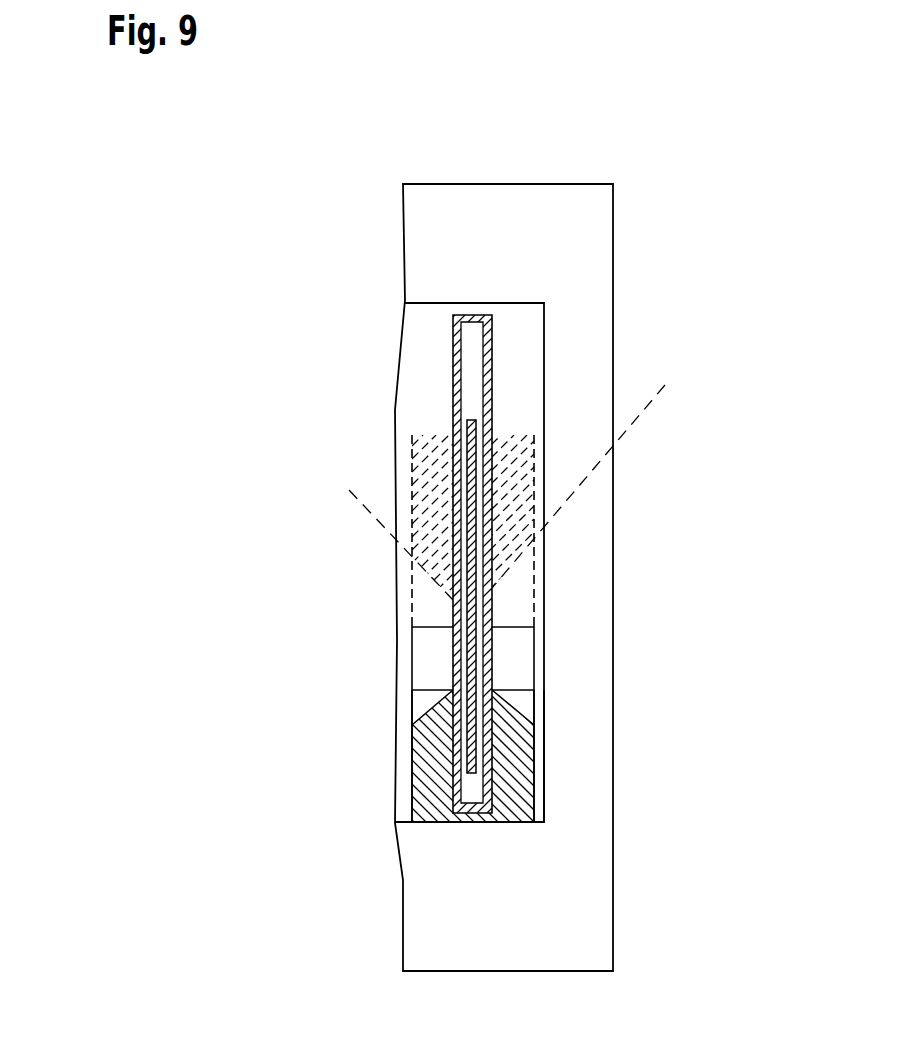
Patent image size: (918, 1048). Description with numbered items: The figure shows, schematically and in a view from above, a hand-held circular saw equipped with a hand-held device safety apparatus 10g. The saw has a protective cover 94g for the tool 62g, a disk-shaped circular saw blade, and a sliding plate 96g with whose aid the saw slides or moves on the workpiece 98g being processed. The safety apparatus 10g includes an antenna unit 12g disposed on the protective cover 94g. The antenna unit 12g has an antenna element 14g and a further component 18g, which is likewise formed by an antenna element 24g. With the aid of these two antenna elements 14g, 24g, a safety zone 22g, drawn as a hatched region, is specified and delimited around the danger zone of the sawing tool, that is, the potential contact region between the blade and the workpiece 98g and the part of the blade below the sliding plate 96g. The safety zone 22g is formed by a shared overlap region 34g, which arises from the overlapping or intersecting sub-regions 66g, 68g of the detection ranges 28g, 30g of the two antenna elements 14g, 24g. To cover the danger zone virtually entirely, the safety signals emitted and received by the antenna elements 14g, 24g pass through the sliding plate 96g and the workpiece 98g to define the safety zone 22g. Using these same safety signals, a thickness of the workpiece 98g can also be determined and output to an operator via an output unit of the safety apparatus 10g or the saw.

The workpiece 98g is at (593, 250).
The sliding plate 96g is at (420, 333).
The protective cover 94g is at (490, 512).
The safety zone 22g is at (525, 435).
The antenna element 24g is at (423, 655).
The antenna element 14g is at (525, 658).
The further component 18g is at (423, 640).
The detection range 28g is at (513, 700).
The hand-held device safety apparatus 10g is at (512, 605).
The tool 62g is at (473, 433).
The detection range 30g is at (413, 705).
The antenna unit 12g is at (541, 706).
The sub-region 68g is at (445, 745).
The sub-region 66g is at (512, 742).
The overlap region 34g is at (435, 777).